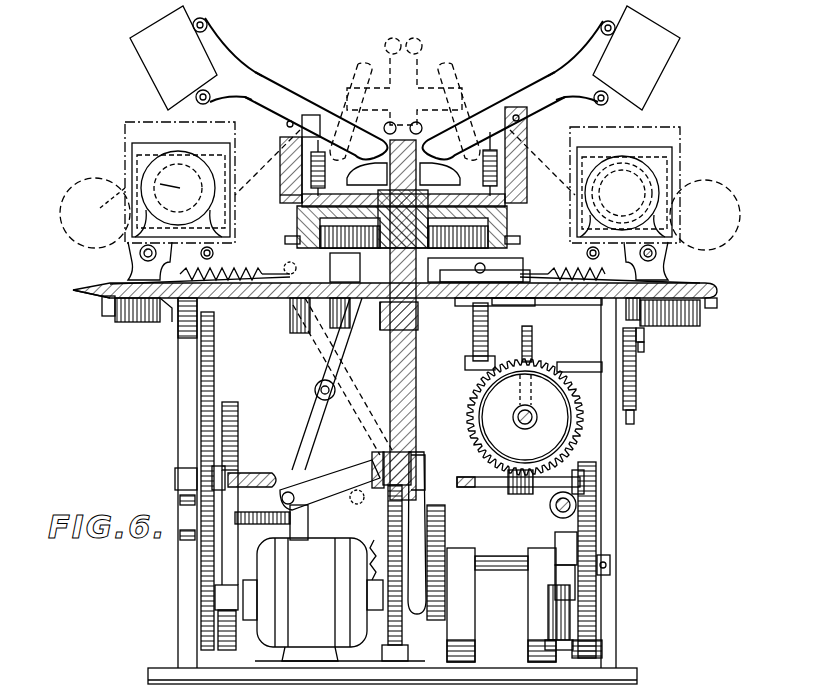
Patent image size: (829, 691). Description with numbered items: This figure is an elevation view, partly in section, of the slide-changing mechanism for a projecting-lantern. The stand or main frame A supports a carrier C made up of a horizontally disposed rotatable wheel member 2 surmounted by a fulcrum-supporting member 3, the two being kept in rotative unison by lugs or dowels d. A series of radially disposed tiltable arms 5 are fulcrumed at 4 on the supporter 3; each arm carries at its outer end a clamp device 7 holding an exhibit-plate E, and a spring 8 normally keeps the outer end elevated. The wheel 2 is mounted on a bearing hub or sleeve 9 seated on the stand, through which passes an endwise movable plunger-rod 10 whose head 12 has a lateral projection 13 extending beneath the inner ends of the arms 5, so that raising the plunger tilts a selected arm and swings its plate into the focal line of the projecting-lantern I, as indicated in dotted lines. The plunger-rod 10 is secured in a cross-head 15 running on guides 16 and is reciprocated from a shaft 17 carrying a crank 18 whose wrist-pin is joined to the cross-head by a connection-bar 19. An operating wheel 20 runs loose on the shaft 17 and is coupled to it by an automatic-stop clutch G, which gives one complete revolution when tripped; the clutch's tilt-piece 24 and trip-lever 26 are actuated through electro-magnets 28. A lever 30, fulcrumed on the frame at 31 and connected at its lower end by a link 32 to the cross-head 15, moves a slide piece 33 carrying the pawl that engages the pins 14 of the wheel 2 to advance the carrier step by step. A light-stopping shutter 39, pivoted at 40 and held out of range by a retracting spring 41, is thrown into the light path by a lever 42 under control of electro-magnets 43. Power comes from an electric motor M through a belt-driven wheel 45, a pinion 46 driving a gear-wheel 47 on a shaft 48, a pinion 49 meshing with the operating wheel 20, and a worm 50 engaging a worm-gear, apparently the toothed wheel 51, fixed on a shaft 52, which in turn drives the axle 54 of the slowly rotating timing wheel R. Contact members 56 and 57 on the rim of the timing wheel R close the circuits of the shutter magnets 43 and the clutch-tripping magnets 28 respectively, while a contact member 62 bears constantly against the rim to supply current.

The exhibit-plate E is at (158, 62).
The clamp device 7 is at (207, 40).
The tiltable arms 5 is at (268, 100).
The fulcrum 4 is at (304, 108).
The plunger-head 12 is at (417, 139).
The fulcrum-supporting member 3 is at (280, 166).
The spring 8 is at (404, 164).
The lateral projection 13 is at (404, 175).
The lugs or dowels d is at (280, 193).
The rotatable wheel member 2 is at (297, 216).
The carrier C is at (520, 200).
The ratchet pins 14 is at (285, 240).
The projecting-lantern I is at (150, 163).
The light-stopping shutter 39 is at (68, 210).
The pivotal axis 40 is at (138, 258).
The retracting spring 41 is at (225, 282).
The stand or main frame A is at (585, 300).
The shutter lever 42 is at (102, 300).
The shutter electro-magnets 43 is at (135, 322).
The contact member 62 is at (660, 328).
The contact member 56 is at (645, 335).
The contact member 57 is at (645, 350).
The timing wheel R is at (637, 370).
The gear-wheel 47 is at (201, 375).
The belt wheel 45 is at (238, 440).
The pinion 46 is at (195, 502).
The transmission shaft 48 is at (258, 466).
The worm 50 is at (518, 496).
The slide piece 33 is at (345, 267).
The lever 30 is at (338, 366).
The lever fulcrum 31 is at (335, 390).
The link 32 is at (332, 496).
The plunger-rod 10 is at (392, 350).
The bearing hub or sleeve 9 is at (418, 312).
The cross-head 15 is at (412, 458).
The guides 16 is at (388, 520).
The connection-bar 19 is at (427, 488).
The crank 18 is at (440, 548).
The crank-shaft 17 is at (500, 560).
The electric motor M is at (313, 599).
The gear wheel 51 is at (525, 417).
The worm-gear shaft 52 is at (513, 418).
The axle 54 is at (555, 366).
The operating wheel 20 is at (596, 612).
The trip-lever 26 is at (596, 640).
The tilt-piece 24 is at (575, 598).
The automatic-stop clutch G is at (575, 562).
The clutch-tripping electro-magnets 28 is at (578, 515).
The pinion 49 is at (592, 492).